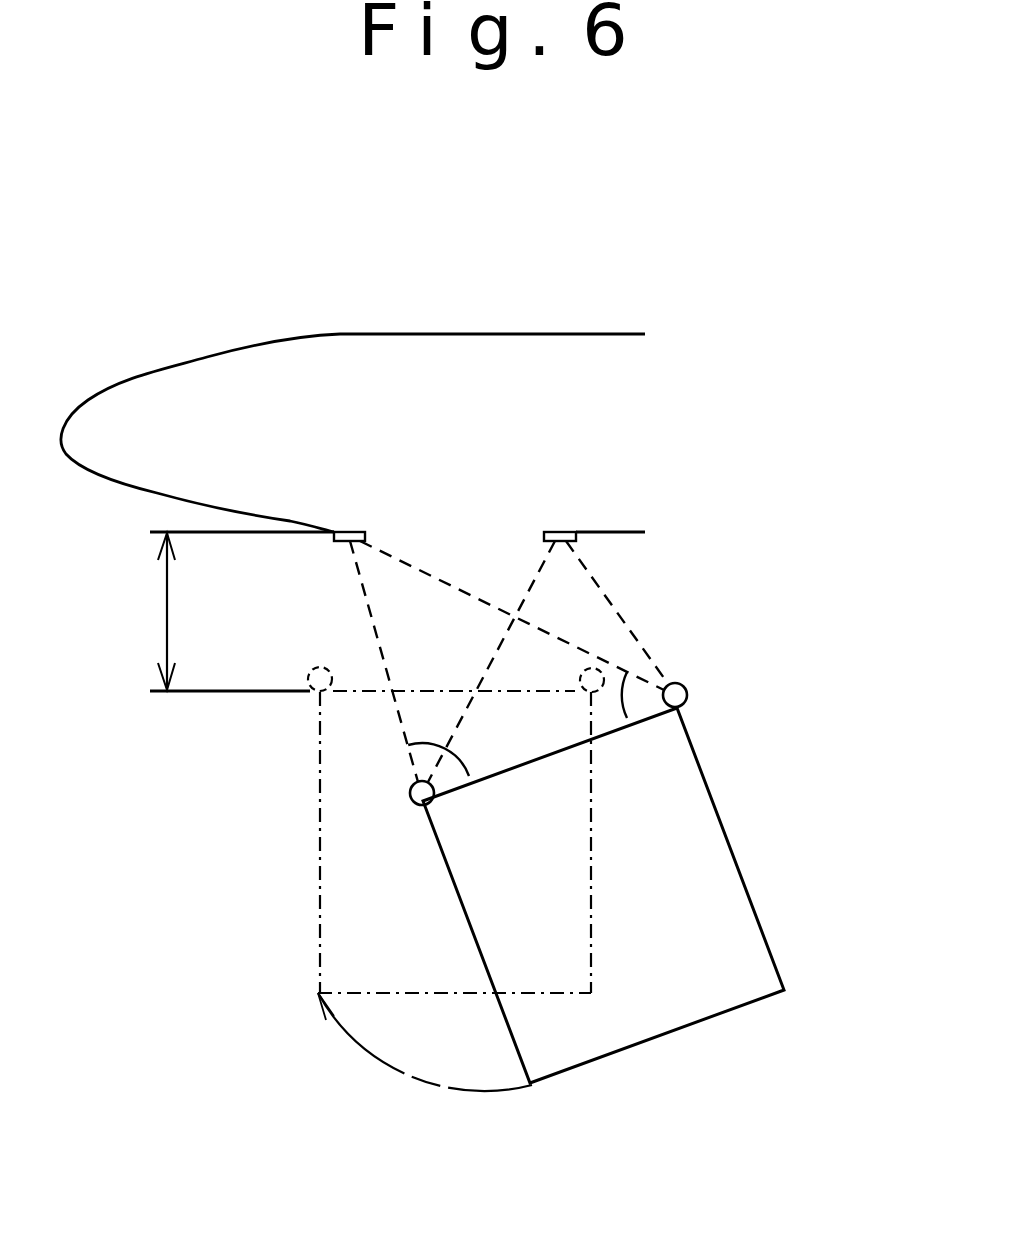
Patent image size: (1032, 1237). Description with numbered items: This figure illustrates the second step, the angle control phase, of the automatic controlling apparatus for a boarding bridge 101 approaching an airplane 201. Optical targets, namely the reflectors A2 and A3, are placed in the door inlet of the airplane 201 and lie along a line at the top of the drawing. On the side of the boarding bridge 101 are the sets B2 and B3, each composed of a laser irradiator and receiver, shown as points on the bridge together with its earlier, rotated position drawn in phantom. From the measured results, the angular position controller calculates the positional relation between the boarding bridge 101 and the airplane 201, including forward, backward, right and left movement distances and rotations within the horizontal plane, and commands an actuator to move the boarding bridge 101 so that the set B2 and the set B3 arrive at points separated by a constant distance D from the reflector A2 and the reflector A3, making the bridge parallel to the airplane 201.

The airplane 201 is at (468, 352).
The boarding bridge 101 is at (747, 878).
The optical target (reflector) A2 is at (257, 512).
The optical target (reflector) A3 is at (594, 512).
The set of laser irradiator and receiver B2 is at (420, 794).
The set of laser irradiator and receiver B3 is at (676, 694).
The constant distance D is at (220, 612).